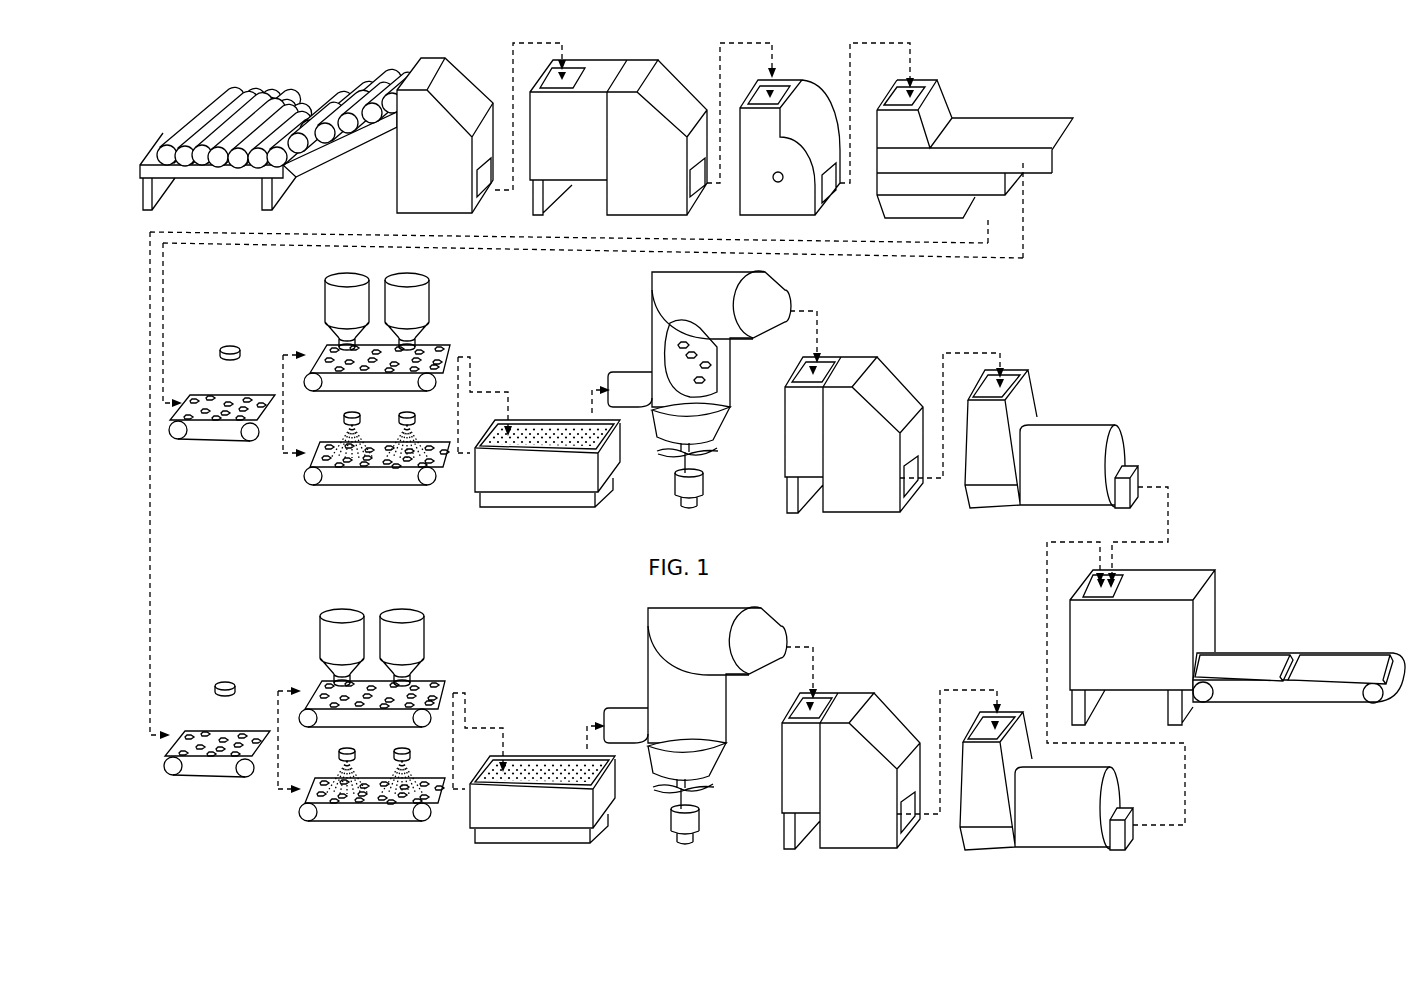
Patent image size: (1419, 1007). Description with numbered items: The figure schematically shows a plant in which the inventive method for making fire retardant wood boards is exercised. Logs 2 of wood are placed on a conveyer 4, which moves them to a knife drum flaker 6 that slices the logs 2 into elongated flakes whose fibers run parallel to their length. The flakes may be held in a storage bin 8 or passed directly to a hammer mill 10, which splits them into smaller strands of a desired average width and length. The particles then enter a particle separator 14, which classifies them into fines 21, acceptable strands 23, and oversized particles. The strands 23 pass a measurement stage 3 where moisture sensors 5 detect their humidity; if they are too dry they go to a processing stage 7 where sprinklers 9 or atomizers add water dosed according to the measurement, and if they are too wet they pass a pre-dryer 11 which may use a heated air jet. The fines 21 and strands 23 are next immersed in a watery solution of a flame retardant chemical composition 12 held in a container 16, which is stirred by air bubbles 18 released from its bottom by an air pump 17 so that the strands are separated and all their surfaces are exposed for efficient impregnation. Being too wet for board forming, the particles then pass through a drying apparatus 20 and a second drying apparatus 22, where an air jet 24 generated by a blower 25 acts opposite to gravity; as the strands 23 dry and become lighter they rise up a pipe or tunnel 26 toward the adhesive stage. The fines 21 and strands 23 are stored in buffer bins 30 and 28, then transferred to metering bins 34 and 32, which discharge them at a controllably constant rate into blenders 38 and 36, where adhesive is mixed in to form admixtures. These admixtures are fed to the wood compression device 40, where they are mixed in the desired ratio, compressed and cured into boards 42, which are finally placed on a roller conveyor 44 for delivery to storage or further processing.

The logs 2 is at (183, 108).
The measurement stage 3 is at (240, 460).
The conveyer 4 is at (320, 153).
The moisture sensors 5 is at (236, 343).
The knife drum flaker 6 is at (462, 102).
The processing stage 7 is at (497, 348).
The storage bin 8 is at (673, 103).
The sprinklers 9 is at (415, 417).
The hammer mill 10 is at (813, 120).
The pre-dryer 11 is at (423, 303).
The watery solution of a flame retardant chemical composition 12 is at (523, 423).
The particle separator 14 is at (965, 130).
The container 16 is at (583, 478).
The air pump 17 is at (578, 500).
The air bubbles 18 is at (555, 425).
The drying apparatus 20 is at (650, 305).
The fines 21 is at (311, 710).
The drying apparatus 22 is at (686, 708).
The strands 23 is at (215, 405).
The air jet 24 is at (688, 358).
The blower 25 is at (705, 482).
The pipe or tunnel 26 is at (732, 400).
The bin 28 is at (890, 393).
The bin 30 is at (851, 755).
The metering bin 32 is at (1022, 403).
The metering bin 34 is at (1040, 743).
The blender 36 is at (1118, 445).
The blender 38 is at (1140, 816).
The wood compression device 40 is at (1190, 582).
The oriented strand boards 42 is at (1238, 660).
The roller conveyor 44 is at (1365, 702).